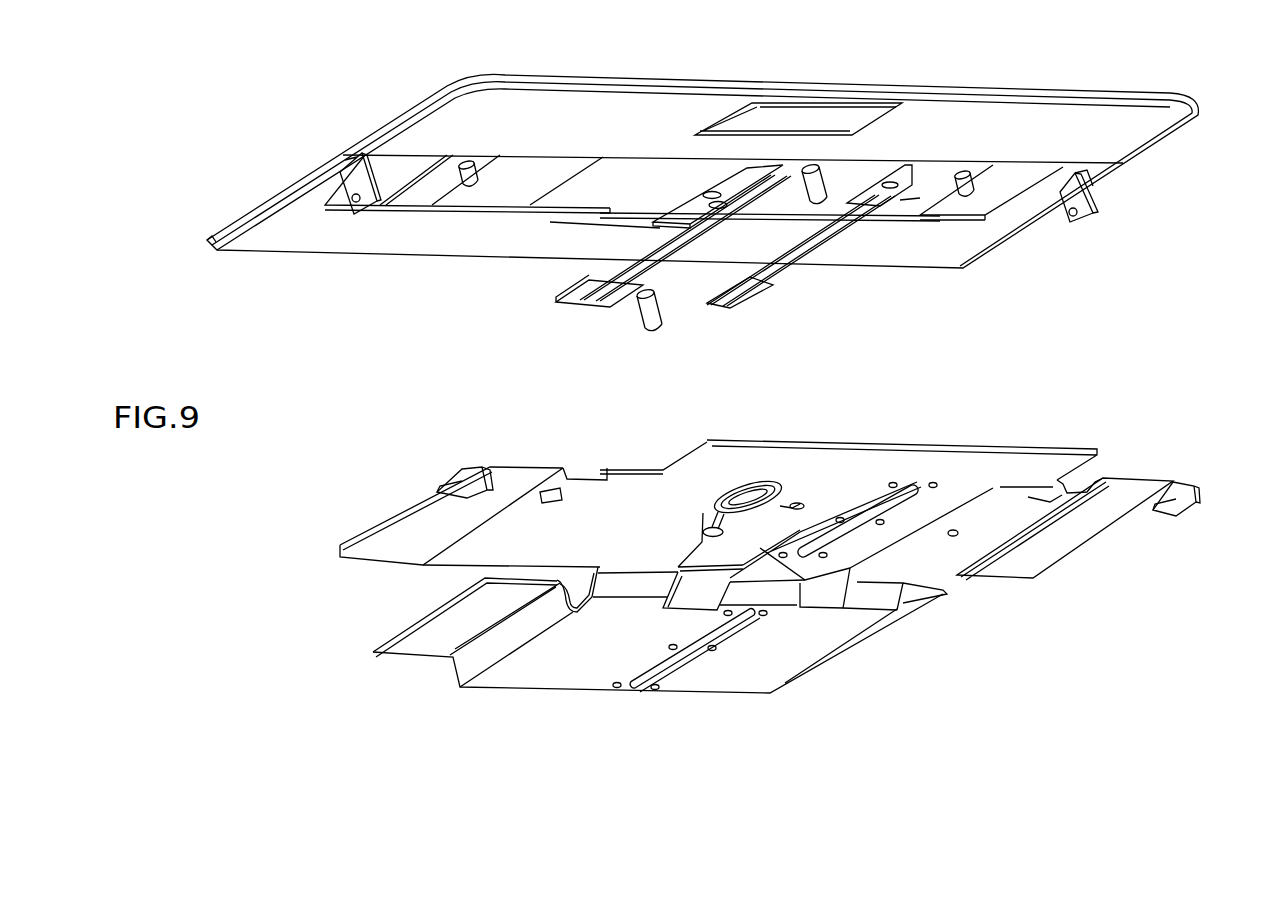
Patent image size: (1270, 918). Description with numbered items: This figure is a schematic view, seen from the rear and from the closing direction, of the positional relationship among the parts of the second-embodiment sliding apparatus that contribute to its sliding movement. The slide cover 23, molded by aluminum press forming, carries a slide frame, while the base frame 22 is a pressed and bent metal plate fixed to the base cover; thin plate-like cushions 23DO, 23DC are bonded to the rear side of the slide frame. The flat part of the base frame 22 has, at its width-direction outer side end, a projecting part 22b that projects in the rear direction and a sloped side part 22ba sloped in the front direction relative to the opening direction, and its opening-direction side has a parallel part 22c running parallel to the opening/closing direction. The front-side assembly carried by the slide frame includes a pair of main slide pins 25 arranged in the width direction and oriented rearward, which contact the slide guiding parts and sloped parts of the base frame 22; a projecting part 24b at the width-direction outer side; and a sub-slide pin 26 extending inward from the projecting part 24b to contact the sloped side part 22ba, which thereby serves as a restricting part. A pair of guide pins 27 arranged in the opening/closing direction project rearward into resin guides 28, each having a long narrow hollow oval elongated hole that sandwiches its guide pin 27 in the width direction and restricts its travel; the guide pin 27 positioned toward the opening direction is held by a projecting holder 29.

The base frame 22 is at (1072, 445).
The projecting part 22b is at (476, 478).
The sloped side part 22ba is at (441, 490).
The parallel part 22c is at (382, 520).
The slide cover 23 is at (655, 82).
The cushion 23DC is at (980, 240).
The cushion 23DO is at (1127, 143).
The projecting part 24b is at (345, 207).
The main slide pin 25 is at (471, 190).
The sub-slide pin 26 is at (360, 204).
The guide pin 27 is at (637, 318).
The guide 28 is at (914, 489).
The holder 29 is at (718, 307).